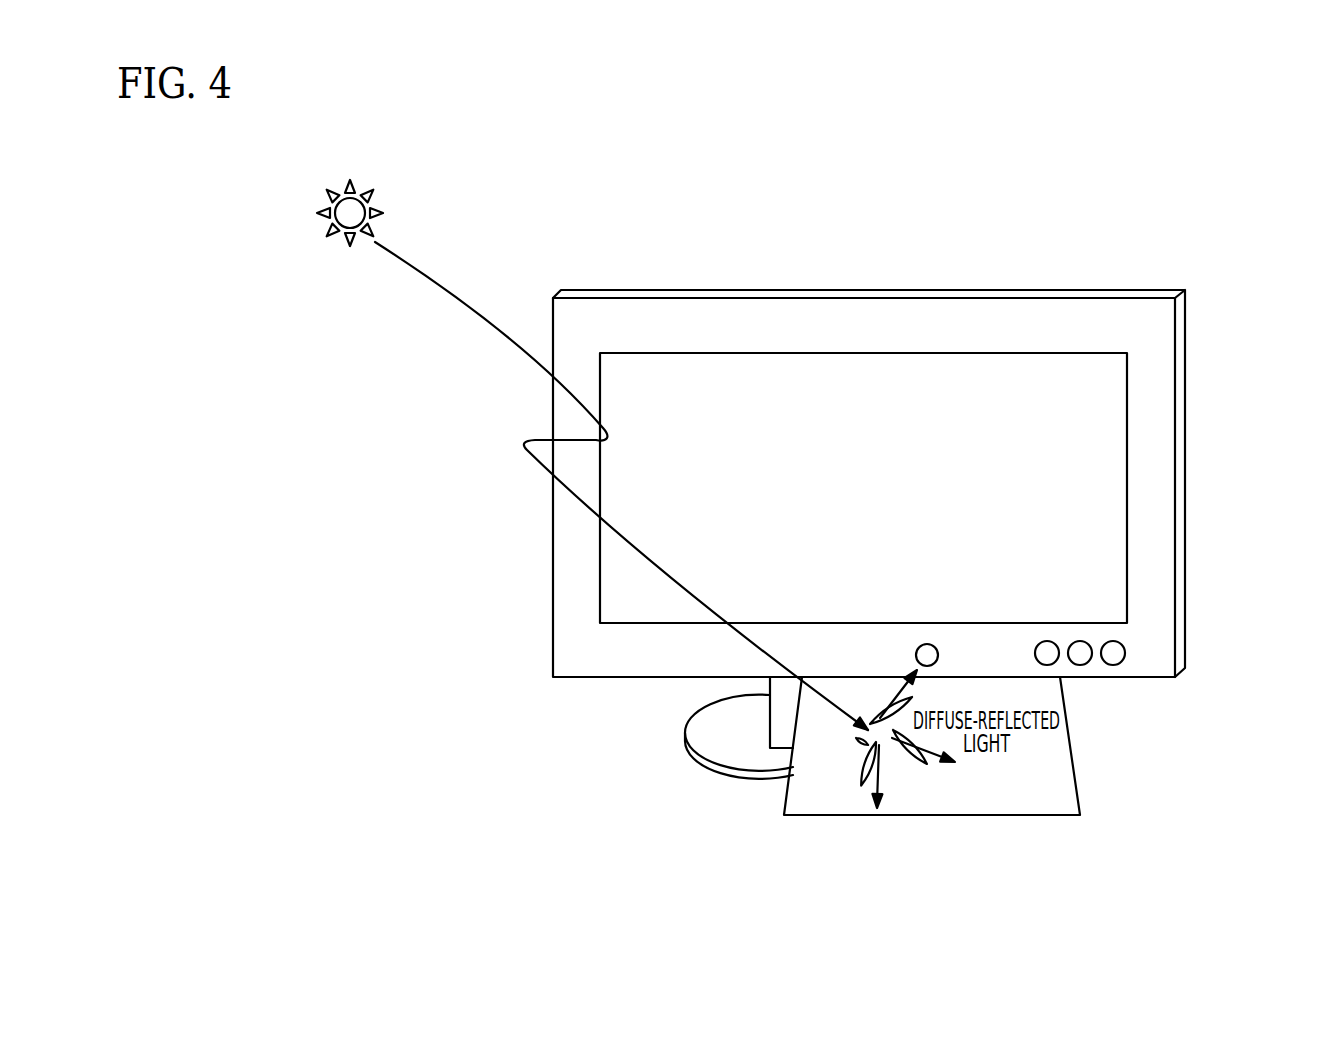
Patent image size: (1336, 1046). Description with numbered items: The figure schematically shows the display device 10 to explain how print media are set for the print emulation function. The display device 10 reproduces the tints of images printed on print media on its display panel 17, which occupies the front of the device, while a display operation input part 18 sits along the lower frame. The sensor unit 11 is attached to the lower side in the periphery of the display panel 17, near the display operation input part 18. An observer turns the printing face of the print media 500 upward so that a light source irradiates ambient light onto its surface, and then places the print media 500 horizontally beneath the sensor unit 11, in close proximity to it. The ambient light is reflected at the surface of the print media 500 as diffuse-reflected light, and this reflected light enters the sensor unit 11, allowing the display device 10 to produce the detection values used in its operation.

The display device 10 is at (1118, 270).
The sensor unit 11 is at (926, 643).
The display panel 17 is at (1073, 457).
The display operation input part 18 is at (1135, 652).
The print media 500 is at (1052, 772).